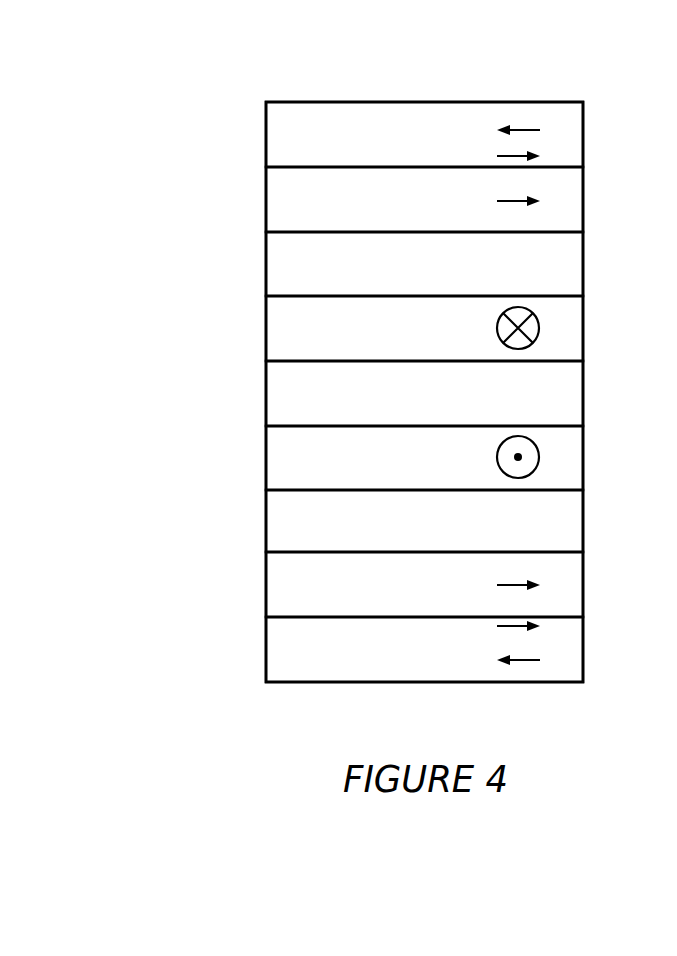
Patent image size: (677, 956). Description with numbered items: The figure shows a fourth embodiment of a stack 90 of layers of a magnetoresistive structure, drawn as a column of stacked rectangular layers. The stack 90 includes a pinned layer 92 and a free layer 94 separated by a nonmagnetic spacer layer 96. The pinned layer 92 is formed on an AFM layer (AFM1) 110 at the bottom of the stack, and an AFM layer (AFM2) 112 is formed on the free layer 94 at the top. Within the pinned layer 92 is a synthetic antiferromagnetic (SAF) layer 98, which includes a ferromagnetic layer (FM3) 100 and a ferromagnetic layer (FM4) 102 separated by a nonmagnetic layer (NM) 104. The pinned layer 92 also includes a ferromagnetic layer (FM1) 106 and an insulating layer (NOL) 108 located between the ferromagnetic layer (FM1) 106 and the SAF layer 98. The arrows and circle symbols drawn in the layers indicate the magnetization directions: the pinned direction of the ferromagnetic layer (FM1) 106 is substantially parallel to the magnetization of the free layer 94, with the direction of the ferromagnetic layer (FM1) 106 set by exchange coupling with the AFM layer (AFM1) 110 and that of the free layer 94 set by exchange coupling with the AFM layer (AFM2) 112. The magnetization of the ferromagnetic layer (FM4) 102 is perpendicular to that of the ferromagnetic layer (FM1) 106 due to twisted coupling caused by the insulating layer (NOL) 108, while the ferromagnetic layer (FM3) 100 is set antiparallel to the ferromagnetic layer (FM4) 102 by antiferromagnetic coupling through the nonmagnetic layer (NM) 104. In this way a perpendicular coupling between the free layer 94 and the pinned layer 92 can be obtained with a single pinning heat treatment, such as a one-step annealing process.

The stack 90 is at (428, 52).
The AFM layer (AFM2) 112 is at (567, 139).
The free layer 94 is at (567, 204).
The nonmagnetic spacer layer 96 is at (567, 266).
The pinned layer 92 is at (590, 299).
The synthetic antiferromagnetic (SAF) layer 98 is at (260, 303).
The ferromagnetic layer (FM3) 100 is at (352, 350).
The nonmagnetic layer (NM) 104 is at (357, 414).
The ferromagnetic layer (FM4) 102 is at (360, 475).
The insulating layer (NOL) 108 is at (277, 529).
The ferromagnetic layer (FM1) 106 is at (278, 590).
The AFM layer (AFM1) 110 is at (280, 655).